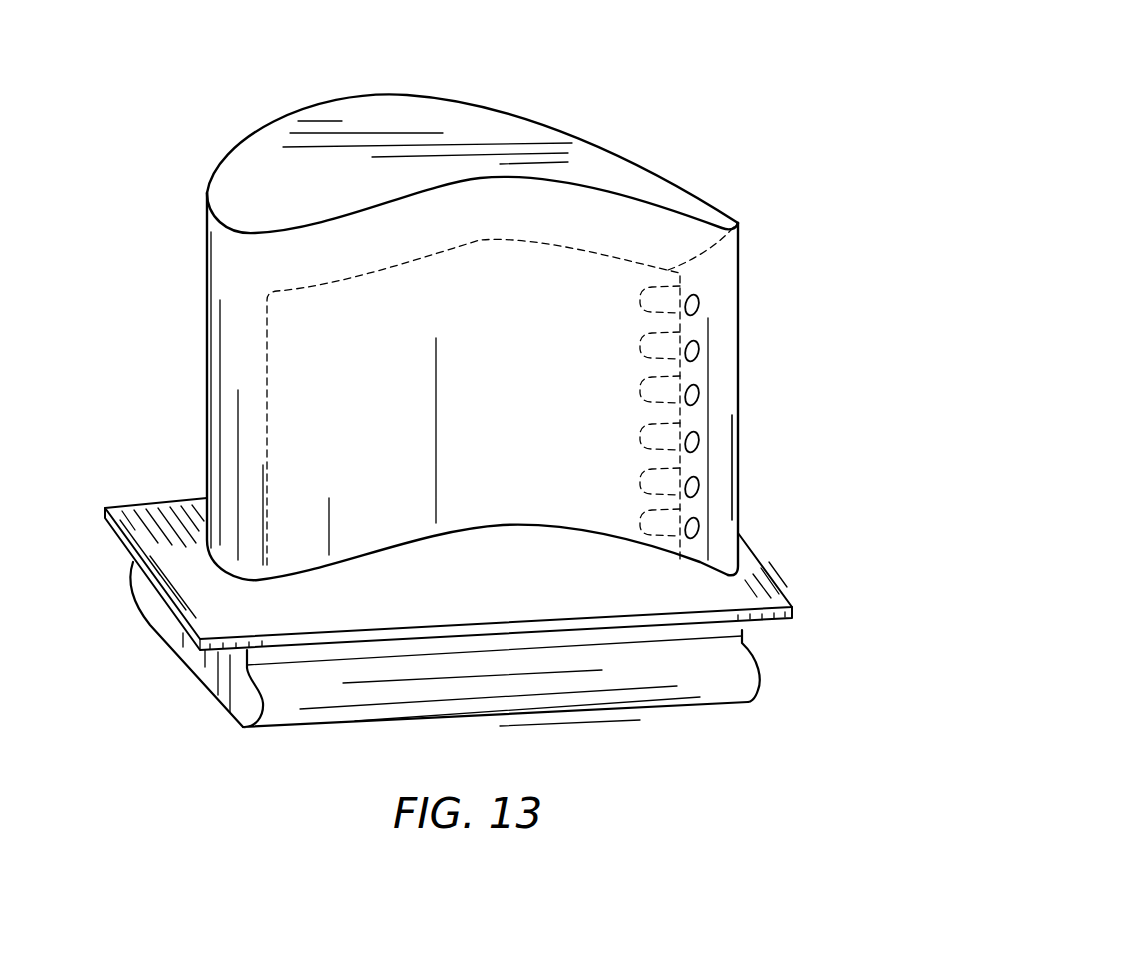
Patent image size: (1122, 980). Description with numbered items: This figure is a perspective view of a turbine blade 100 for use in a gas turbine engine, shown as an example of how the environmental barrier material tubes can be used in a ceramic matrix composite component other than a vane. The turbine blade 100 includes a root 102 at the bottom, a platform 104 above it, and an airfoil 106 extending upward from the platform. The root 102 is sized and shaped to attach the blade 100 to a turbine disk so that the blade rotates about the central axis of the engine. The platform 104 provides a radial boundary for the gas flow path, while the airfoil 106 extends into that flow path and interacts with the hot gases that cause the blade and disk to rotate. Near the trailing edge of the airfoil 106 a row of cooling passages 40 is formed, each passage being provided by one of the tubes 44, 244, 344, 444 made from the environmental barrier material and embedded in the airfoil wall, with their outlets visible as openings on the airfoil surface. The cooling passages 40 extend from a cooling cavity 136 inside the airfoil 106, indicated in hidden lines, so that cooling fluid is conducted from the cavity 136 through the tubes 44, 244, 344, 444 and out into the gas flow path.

The turbine blade 100 is at (657, 106).
The root 102 is at (203, 714).
The platform 104 is at (142, 479).
The airfoil 106 is at (162, 252).
The cooling cavity 136 is at (740, 222).
The cooling passages 40 is at (719, 347).
The tube 44 is at (699, 396).
The tube 244 is at (670, 438).
The tube 344 is at (670, 483).
The tube 444 is at (670, 524).